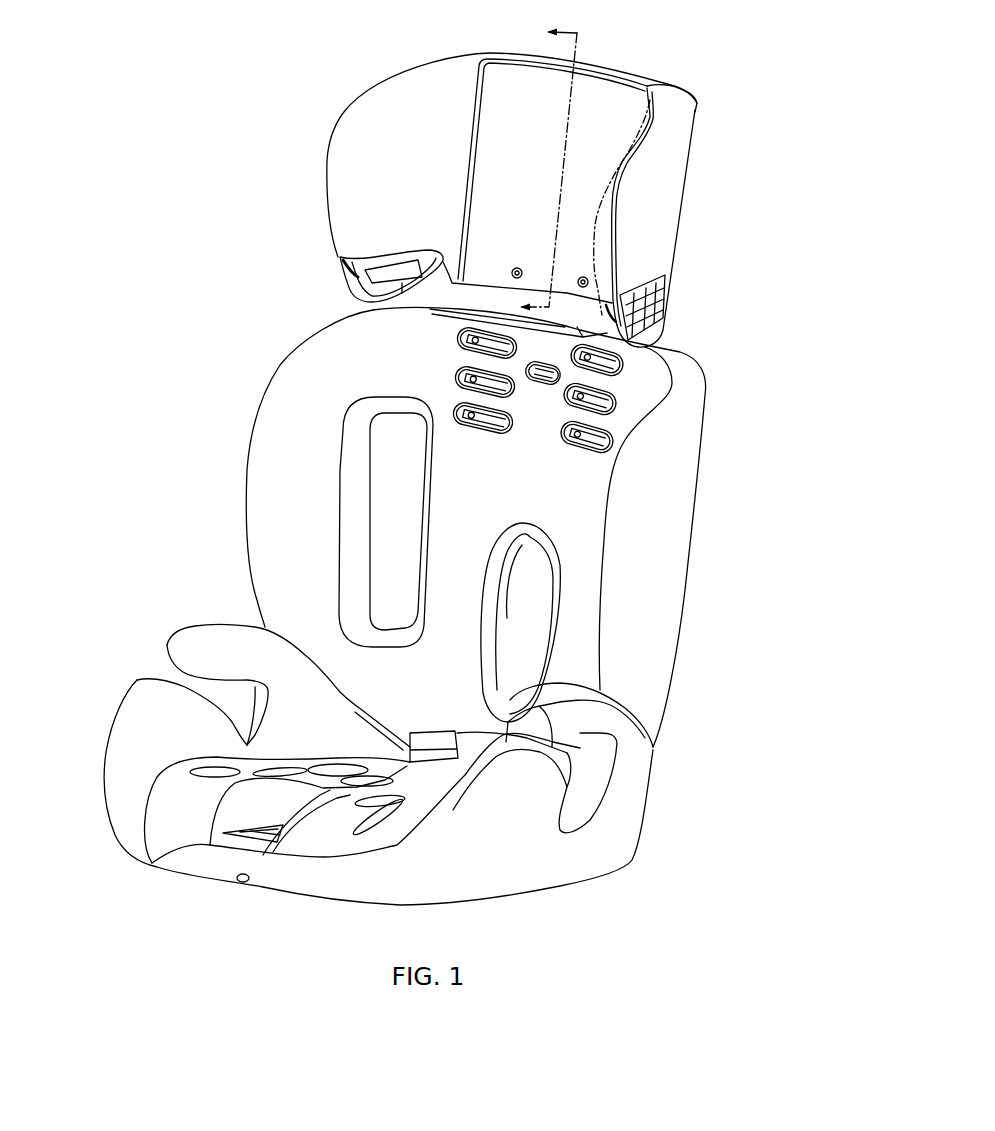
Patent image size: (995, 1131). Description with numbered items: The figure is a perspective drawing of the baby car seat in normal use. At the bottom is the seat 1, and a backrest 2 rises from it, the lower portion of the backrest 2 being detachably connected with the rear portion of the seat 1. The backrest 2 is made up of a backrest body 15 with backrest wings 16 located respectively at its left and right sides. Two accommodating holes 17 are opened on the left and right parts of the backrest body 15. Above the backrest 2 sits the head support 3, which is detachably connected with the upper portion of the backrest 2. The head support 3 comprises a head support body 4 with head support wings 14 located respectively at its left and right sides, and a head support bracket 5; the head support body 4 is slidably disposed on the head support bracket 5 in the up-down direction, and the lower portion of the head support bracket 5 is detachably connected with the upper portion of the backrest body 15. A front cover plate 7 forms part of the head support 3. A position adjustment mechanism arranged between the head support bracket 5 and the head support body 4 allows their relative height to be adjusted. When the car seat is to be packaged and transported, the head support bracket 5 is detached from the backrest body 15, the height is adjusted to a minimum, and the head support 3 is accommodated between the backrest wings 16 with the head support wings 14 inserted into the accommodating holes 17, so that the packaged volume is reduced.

The seat 1 is at (113, 681).
The backrest 2 is at (469, 527).
The head support 3 is at (494, 173).
The head support body 4 is at (626, 57).
The head support bracket 5 is at (577, 313).
The front cover plate 7 is at (577, 187).
The head support wing 14 is at (343, 143).
The backrest body 15 is at (570, 570).
The backrest wing 16 is at (270, 550).
The accommodating hole 17 is at (387, 490).